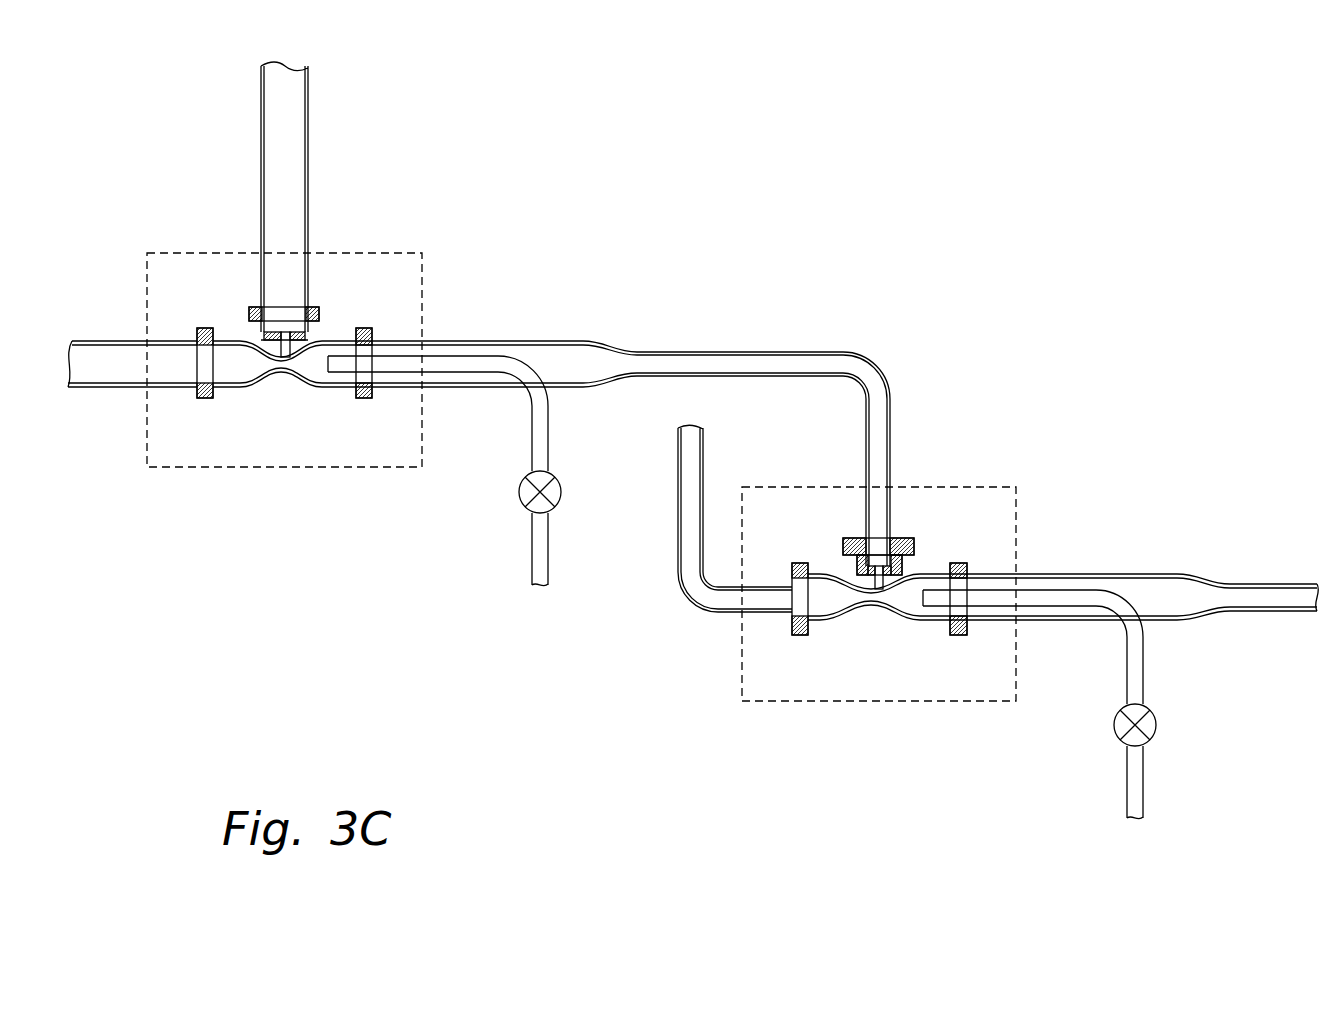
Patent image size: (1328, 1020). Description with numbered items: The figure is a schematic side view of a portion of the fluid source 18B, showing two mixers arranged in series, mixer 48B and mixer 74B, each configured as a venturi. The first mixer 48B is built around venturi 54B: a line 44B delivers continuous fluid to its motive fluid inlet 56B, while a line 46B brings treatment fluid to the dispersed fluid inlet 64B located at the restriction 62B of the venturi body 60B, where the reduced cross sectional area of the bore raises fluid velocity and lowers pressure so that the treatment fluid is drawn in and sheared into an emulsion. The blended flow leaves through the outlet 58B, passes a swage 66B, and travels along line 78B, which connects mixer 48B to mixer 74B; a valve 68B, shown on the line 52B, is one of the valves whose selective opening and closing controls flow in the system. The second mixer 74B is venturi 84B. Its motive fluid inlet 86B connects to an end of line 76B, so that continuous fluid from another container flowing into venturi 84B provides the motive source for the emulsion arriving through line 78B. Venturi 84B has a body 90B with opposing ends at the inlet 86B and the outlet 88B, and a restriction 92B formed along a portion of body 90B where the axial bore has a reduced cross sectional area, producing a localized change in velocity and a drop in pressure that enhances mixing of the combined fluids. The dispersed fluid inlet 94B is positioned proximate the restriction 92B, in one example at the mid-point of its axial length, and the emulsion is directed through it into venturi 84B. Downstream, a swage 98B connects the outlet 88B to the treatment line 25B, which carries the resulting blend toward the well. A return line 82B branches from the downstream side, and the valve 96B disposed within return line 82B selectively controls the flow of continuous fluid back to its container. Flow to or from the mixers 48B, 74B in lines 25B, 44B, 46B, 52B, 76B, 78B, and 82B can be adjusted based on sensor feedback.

The fluid source 18B is at (1173, 170).
The treatment line 25B is at (1277, 583).
The line 44B is at (104, 340).
The line 46B is at (307, 134).
The mixer 48B is at (240, 470).
The line 52B is at (549, 547).
The venturi 54B is at (340, 290).
The first upstream conduit section 56B is at (182, 355).
The first downstream conduit section 58B is at (382, 349).
The first converging section 60B is at (225, 388).
The first diverging section 62B is at (290, 376).
The venturi 64B is at (283, 364).
The first outer conduit 66B is at (612, 345).
The valve 68B is at (561, 492).
The mixer 74B is at (840, 702).
The line 76B is at (704, 448).
The line 78B is at (780, 350).
The return line 82B is at (1145, 780).
The venturi 84B is at (937, 522).
The motive fluid inlet 86B is at (775, 594).
The outlet 88B is at (978, 578).
The body 90B is at (823, 622).
The restriction 92B is at (884, 616).
The dispersed fluid inlet 94B is at (877, 597).
The valve 96B is at (1156, 725).
The swage 98B is at (1196, 583).